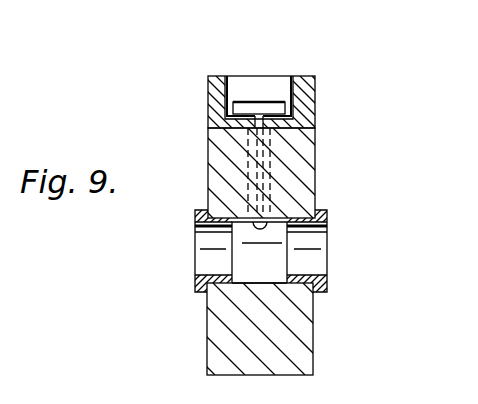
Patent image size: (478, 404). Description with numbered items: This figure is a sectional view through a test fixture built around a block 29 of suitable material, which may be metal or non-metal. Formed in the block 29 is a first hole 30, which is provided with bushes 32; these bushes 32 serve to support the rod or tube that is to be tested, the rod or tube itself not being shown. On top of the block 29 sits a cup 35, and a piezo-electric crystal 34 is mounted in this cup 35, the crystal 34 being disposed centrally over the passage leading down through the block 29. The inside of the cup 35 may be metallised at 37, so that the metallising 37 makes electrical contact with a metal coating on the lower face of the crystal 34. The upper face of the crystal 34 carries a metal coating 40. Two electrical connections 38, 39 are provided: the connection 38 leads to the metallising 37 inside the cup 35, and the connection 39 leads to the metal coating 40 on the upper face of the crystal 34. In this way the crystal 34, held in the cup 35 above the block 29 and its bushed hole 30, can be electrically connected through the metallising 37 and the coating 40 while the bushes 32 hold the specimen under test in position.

The block 29 is at (305, 323).
The first hole 30 is at (248, 285).
The bushes 32 is at (195, 216).
The piezo-electric crystal 34 is at (240, 108).
The cup 35 is at (307, 101).
The metallising 37 is at (230, 80).
The electrical connection 38 is at (284, 82).
The electrical connection 39 is at (264, 100).
The metal coating 40 is at (242, 100).